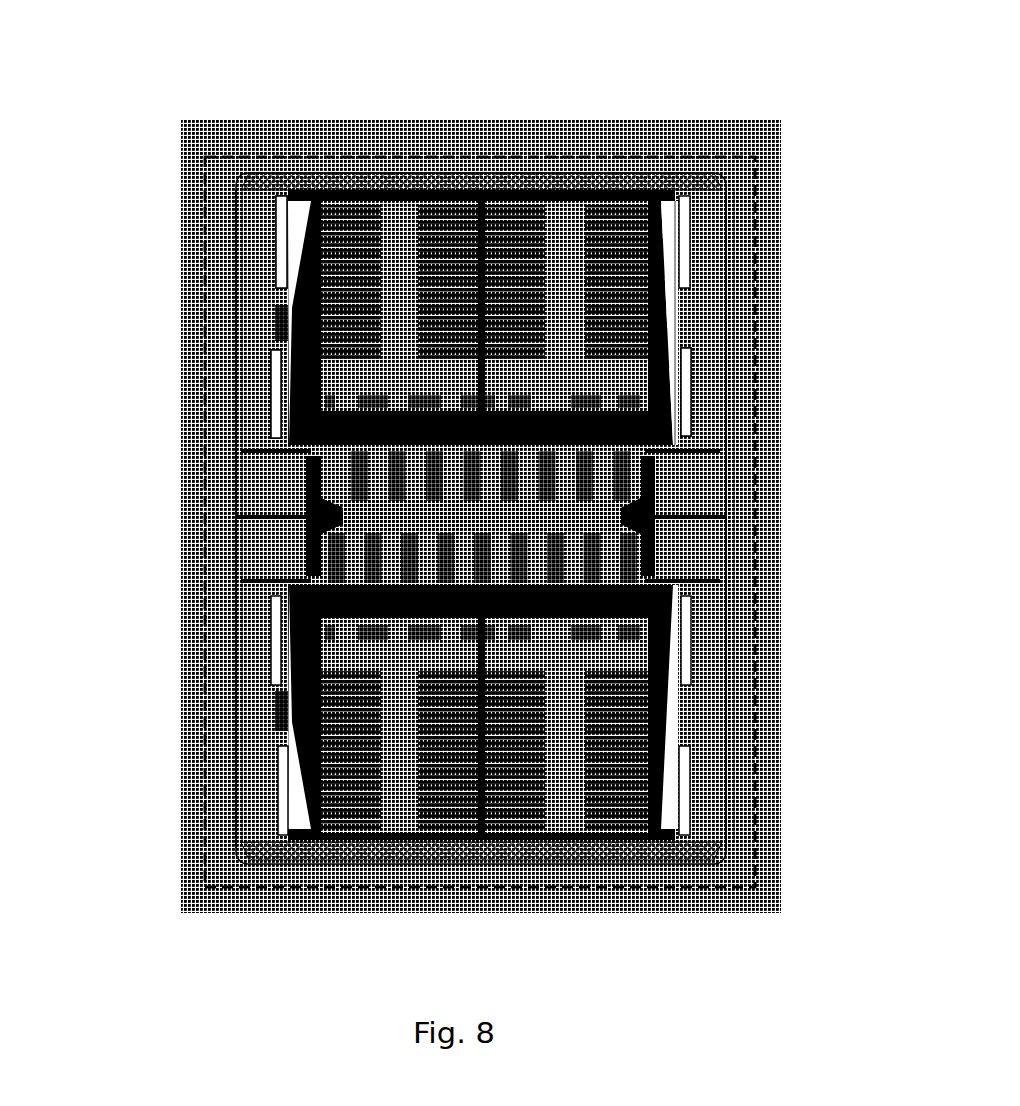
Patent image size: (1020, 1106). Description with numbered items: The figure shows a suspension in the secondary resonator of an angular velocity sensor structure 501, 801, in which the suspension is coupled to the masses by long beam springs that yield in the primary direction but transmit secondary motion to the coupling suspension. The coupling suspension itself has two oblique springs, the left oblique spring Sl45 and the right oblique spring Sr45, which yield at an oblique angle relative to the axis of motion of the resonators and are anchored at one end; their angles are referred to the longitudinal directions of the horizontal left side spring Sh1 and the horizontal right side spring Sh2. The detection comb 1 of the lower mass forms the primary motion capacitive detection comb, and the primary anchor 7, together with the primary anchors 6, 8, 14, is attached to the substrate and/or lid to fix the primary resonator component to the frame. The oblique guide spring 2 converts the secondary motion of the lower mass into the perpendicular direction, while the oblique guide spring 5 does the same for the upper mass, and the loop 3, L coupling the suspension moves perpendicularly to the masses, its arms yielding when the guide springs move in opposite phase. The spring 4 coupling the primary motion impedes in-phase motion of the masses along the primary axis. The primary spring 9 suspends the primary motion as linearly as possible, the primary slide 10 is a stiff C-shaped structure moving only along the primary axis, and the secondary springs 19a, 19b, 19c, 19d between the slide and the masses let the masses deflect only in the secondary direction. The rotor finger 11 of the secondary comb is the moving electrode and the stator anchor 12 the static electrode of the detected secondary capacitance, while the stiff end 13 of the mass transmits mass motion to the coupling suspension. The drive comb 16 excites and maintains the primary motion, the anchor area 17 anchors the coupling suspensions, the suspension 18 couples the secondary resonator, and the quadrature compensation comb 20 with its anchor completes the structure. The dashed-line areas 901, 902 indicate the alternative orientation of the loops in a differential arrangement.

The detection comb 1 is at (277, 293).
The oblique guide spring 2 is at (515, 563).
The loop 3 is at (282, 452).
The loop L is at (370, 559).
The spring coupling the primary motion 4 is at (233, 492).
The oblique guide spring 5 is at (505, 495).
The right oblique spring Sr45 is at (245, 445).
The left oblique spring Sl45 is at (298, 578).
The primary anchor 6 is at (243, 393).
The primary anchor 7 is at (243, 330).
The primary anchor 8 is at (262, 262).
The primary spring 9 is at (262, 192).
The primary slide 10 is at (309, 185).
The rotor finger of the secondary comb 11 is at (392, 185).
The stator anchor of the secondary comb 12 is at (548, 170).
The end of the mass 13 is at (665, 183).
The primary anchor 14 is at (693, 263).
The drive comb 16 is at (683, 413).
The anchor area 17 is at (667, 443).
The suspension coupling the secondary resonator 18 is at (718, 512).
The secondary spring 19a is at (337, 177).
The secondary spring 19b is at (641, 166).
The secondary spring 19c is at (660, 253).
The secondary spring 19d is at (683, 345).
The quadrature compensation comb and its anchor 20 is at (668, 690).
The horizontal left side spring Sh1 is at (240, 290).
The horizontal right side spring Sh2 is at (227, 717).
The upper part area 901 is at (423, 879).
The lower part area 902 is at (480, 522).
The angular velocity sensor structure 501 is at (265, 986).
The angular velocity sensor structure 801 is at (481, 516).